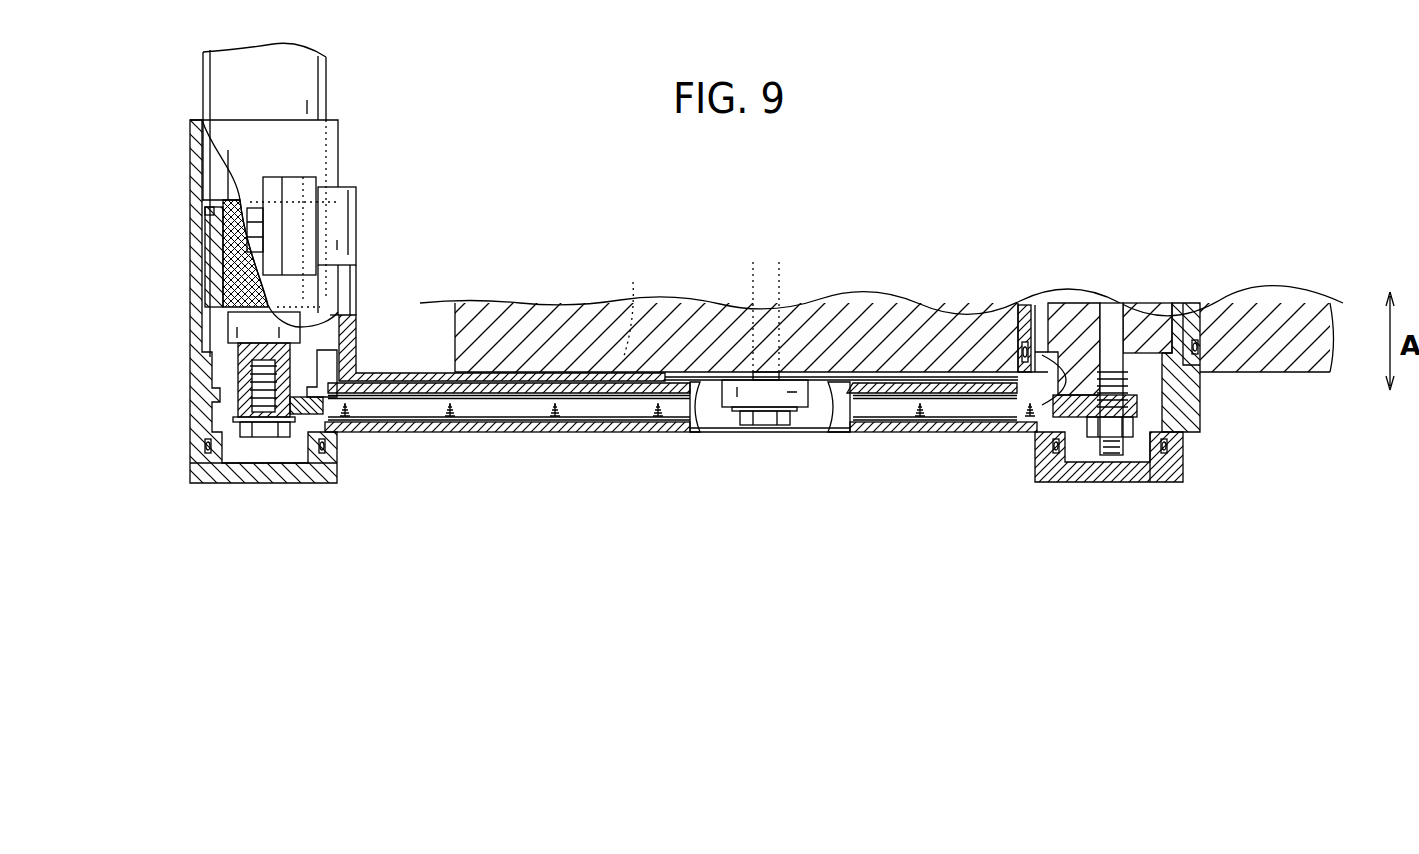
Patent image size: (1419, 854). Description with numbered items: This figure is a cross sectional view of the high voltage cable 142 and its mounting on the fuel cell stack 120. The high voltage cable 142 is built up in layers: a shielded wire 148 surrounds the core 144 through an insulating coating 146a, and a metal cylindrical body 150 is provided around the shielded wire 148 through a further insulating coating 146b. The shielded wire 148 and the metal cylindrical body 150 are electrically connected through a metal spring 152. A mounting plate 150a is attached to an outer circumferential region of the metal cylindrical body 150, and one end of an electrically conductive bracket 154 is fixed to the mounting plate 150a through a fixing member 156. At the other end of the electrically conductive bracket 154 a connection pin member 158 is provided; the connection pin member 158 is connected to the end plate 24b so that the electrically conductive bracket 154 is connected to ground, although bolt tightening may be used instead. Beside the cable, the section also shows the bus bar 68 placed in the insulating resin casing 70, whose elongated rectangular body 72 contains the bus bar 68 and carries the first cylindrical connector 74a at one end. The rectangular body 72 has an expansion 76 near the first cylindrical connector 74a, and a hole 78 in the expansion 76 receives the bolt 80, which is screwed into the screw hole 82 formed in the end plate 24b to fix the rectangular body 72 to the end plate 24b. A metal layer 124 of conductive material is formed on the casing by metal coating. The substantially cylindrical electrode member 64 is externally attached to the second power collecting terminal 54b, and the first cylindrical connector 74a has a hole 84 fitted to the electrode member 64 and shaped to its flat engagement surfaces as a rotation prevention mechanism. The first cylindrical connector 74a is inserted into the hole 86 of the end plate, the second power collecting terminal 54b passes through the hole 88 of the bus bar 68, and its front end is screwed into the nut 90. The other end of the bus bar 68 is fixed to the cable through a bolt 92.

The fuel cell stack 120 is at (1251, 176).
The end plate 24b is at (617, 345).
The connection pin member 158 is at (632, 304).
The screw hole 82 is at (779, 302).
The second power collecting terminal 54b is at (1112, 308).
The insulating coating 146b is at (293, 82).
The metal cylindrical body 150 is at (193, 153).
The mounting plate 150a is at (270, 186).
The high voltage cable 142 is at (366, 176).
The fixing member 156 is at (253, 233).
The metal spring 152 is at (215, 270).
The shielded wire 148 is at (225, 297).
The insulating coating 146a is at (262, 322).
The core 144 is at (235, 370).
The electrically conductive bracket 154 is at (398, 370).
The metal layer 124 is at (376, 437).
The rectangular body 72 is at (442, 430).
The casing 70 is at (562, 442).
The hole 78 is at (760, 440).
The bolt 80 is at (772, 425).
The expansion 76 is at (778, 394).
The bus bar 68 is at (882, 410).
The hole 86 is at (1040, 385).
The hole 84 is at (1050, 420).
The first cylindrical connector 74a is at (1200, 432).
The nut 90 is at (1076, 480).
The hole 88 is at (1122, 480).
The electrode member 64 is at (1150, 470).
The bolt 92 is at (268, 440).